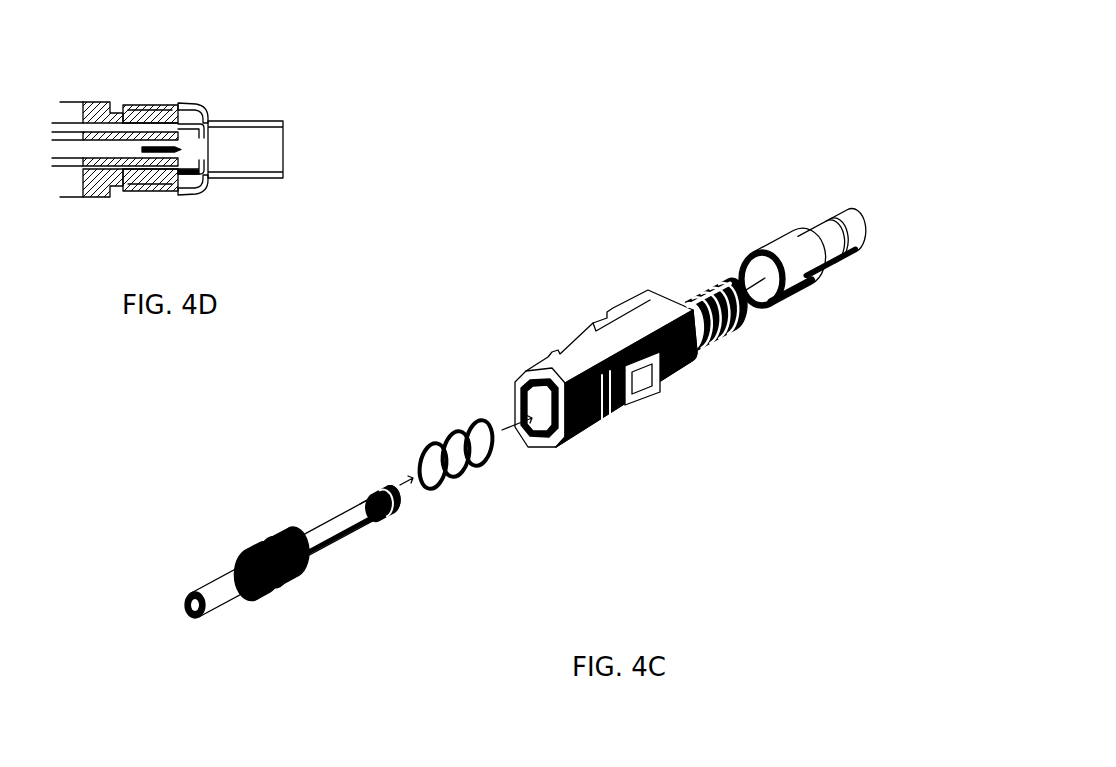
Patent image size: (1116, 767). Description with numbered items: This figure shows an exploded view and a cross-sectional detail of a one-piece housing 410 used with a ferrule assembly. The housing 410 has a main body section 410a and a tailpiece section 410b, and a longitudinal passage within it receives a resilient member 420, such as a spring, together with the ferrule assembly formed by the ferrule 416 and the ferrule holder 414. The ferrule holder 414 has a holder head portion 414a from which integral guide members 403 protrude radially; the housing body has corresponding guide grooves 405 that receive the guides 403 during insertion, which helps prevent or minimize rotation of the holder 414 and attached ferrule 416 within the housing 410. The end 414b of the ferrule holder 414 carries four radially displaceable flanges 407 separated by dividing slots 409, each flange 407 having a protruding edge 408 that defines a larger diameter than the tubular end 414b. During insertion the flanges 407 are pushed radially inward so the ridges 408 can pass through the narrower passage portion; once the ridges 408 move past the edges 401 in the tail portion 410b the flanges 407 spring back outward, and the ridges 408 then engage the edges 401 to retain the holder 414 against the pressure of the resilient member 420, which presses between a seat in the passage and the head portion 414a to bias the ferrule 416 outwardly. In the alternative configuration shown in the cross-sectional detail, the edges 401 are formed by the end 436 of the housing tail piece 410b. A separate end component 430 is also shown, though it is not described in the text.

In FIG. 4D, the edges 401 is at (168, 120).
In FIG. 4C, the guide members 403 is at (268, 543).
In FIG. 4C, the guide grooves 405 is at (532, 392).
In FIG. 4D, the radially displaceable flanges 407 is at (153, 163).
In FIG. 4C, the radially displaceable flanges 407 is at (373, 503).
In FIG. 4D, the protruding edge 408 is at (204, 134).
In FIG. 4C, the protruding edge 408 is at (389, 490).
In FIG. 4D, the dividing slots 409 is at (192, 150).
In FIG. 4C, the dividing slots 409 is at (384, 512).
In FIG. 4C, the one-piece housing 410 is at (593, 382).
In FIG. 4C, the main body section 410a is at (551, 423).
In FIG. 4D, the tailpiece section 410b is at (152, 120).
In FIG. 4C, the tailpiece section 410b is at (700, 297).
In FIG. 4C, the ferrule holder 414 is at (332, 556).
In FIG. 4C, the holder head portion 414a is at (286, 563).
In FIG. 4C, the end of the ferrule holder 414b is at (347, 512).
In FIG. 4C, the ferrule 416 is at (222, 595).
In FIG. 4C, the resilient member 420 is at (470, 472).
In FIG. 4D, the end cap / nose piece 430 is at (207, 117).
In FIG. 4C, the end cap / nose piece 430 is at (812, 276).
In FIG. 4D, the end of the housing tail piece 436 is at (182, 175).